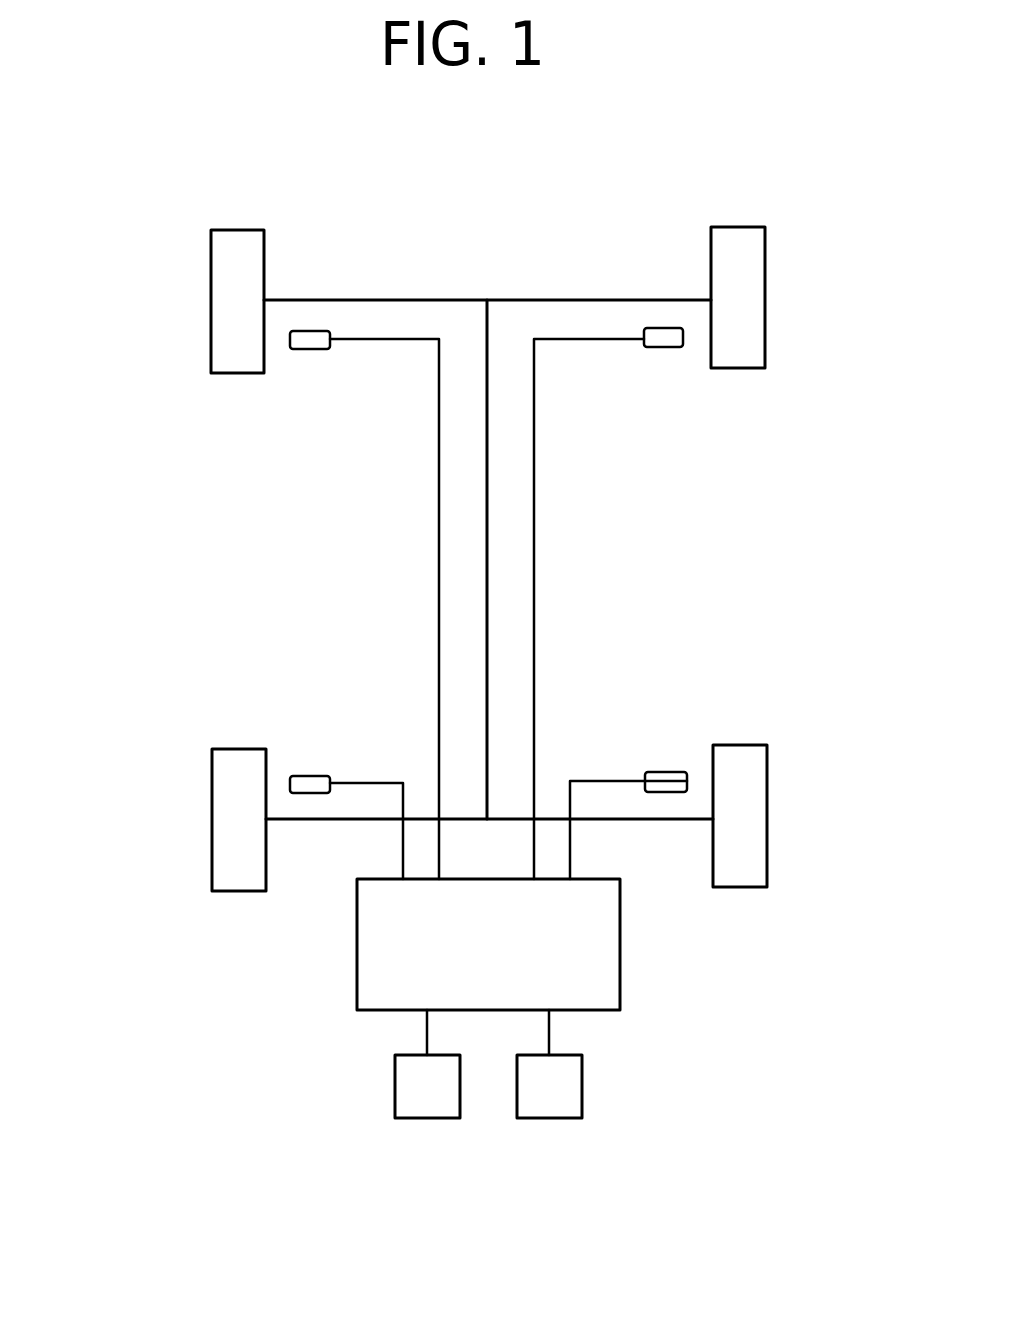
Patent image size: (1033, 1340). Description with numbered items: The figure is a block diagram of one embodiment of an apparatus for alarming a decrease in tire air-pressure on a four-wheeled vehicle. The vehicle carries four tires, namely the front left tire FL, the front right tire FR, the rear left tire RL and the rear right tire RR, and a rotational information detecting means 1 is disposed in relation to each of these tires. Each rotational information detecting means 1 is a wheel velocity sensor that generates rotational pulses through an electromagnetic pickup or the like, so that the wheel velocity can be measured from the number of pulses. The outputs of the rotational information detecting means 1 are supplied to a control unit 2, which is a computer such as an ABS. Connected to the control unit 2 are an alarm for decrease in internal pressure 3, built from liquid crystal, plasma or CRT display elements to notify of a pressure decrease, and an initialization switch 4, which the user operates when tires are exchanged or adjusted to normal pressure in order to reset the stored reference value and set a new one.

The rotational information detecting means 1 is at (300, 341).
The control unit 2 is at (607, 990).
The alarm for decrease in internal pressure 3 is at (420, 1107).
The initialization switch 4 is at (542, 1107).
The front left tire FL is at (225, 272).
The front right tire FR is at (750, 272).
The rear left tire RL is at (227, 802).
The rear right tire RR is at (750, 802).